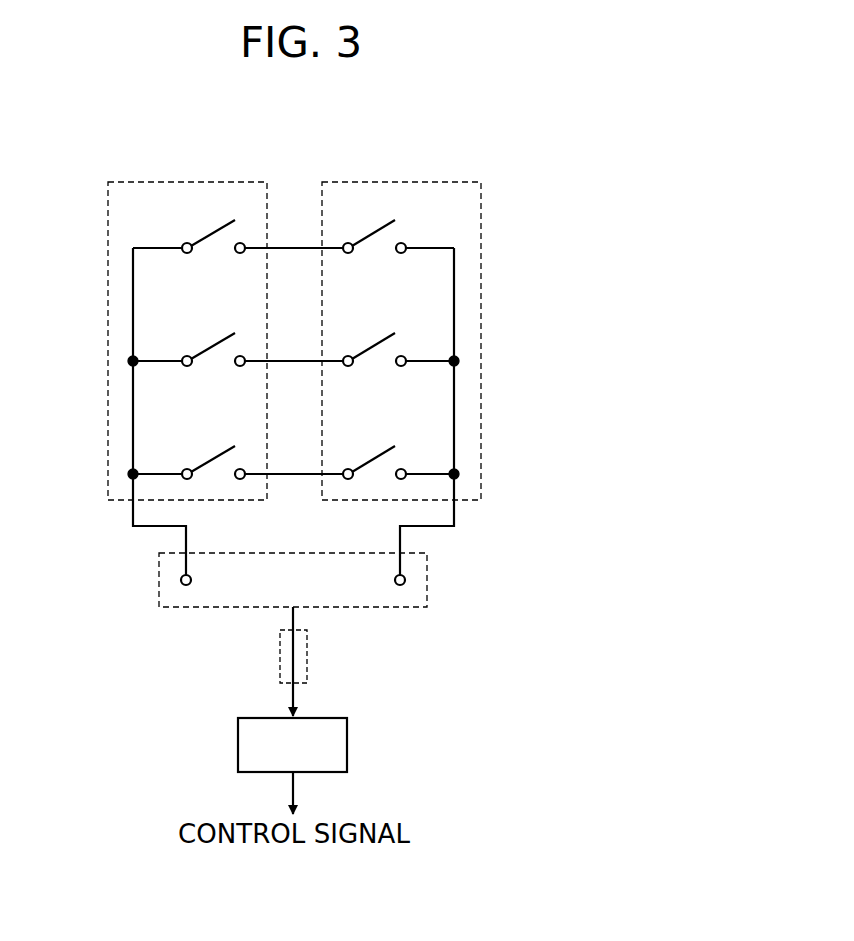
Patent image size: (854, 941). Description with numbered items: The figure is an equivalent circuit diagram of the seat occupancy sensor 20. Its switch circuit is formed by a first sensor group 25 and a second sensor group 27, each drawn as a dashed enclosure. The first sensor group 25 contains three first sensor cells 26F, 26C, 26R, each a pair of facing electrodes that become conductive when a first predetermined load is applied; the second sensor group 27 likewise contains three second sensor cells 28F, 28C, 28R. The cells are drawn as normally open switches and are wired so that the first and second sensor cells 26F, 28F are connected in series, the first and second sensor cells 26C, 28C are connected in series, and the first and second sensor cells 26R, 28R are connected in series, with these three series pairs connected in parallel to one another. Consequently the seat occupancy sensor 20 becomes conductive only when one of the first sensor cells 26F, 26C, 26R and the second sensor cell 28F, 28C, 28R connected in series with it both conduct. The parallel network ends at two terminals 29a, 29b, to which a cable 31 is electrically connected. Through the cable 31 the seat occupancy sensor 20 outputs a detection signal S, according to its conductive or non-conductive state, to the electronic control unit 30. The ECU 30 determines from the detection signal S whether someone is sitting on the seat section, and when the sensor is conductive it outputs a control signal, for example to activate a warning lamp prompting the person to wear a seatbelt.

The seat occupancy sensor 20 is at (443, 154).
The first sensor group 25 is at (108, 284).
The second sensor group 27 is at (483, 284).
The first sensor cell 26F is at (214, 226).
The first sensor cell 26C is at (214, 339).
The first sensor cell 26R is at (214, 452).
The second sensor cell 28F is at (378, 231).
The second sensor cell 28C is at (378, 344).
The second sensor cell 28R is at (378, 458).
The terminal 29a is at (192, 580).
The terminal 29b is at (394, 580).
The cable 31 is at (308, 663).
The detection signal S is at (310, 661).
The electronic control unit (ECU) 30 is at (348, 744).